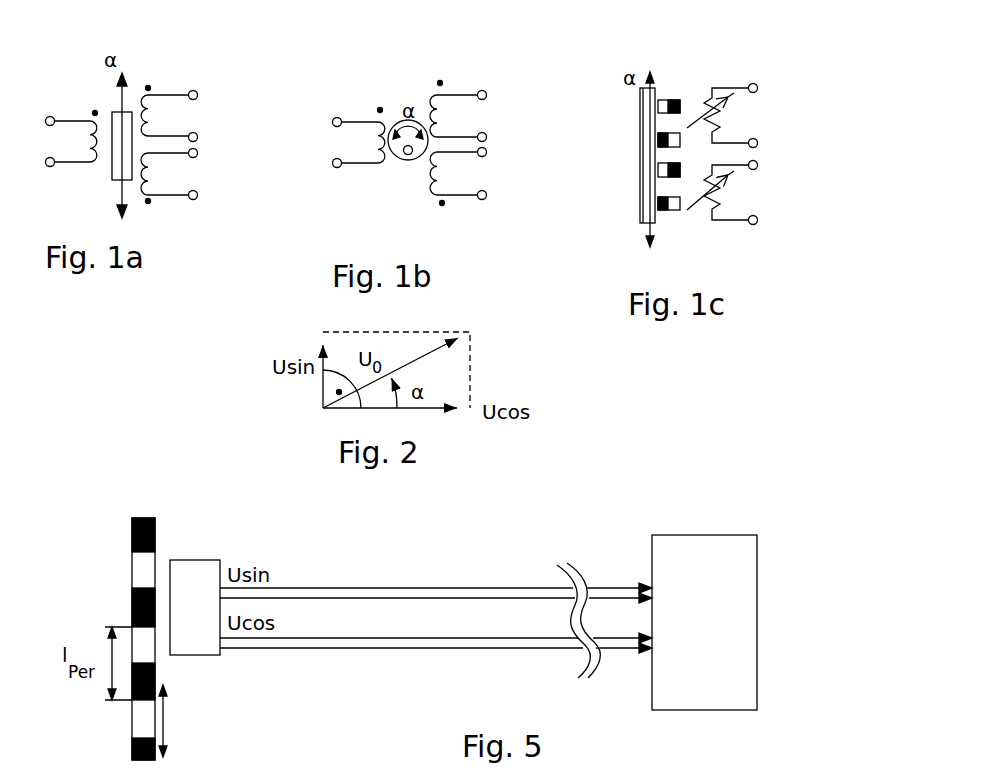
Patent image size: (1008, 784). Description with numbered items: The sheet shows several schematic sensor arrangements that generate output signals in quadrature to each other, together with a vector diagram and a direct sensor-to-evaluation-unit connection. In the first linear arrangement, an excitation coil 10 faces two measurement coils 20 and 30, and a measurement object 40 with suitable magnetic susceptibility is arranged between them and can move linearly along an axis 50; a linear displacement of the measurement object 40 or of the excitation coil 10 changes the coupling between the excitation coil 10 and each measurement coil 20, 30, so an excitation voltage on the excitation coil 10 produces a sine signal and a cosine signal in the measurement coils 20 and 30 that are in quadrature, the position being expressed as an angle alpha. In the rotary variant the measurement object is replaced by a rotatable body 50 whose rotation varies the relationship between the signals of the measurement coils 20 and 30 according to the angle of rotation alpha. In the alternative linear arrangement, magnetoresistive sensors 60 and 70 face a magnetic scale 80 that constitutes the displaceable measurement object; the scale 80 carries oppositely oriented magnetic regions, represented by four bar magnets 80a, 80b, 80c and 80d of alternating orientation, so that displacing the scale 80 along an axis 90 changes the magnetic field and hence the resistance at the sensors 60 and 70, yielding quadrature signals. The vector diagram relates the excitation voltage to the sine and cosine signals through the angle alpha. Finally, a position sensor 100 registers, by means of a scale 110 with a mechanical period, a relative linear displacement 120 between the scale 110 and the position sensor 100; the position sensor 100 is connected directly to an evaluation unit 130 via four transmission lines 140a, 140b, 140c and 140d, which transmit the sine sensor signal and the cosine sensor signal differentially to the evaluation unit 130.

In FIG. 1A, the excitation coil 10 is at (90, 167).
In FIG. 1B, the excitation coil 10 is at (367, 164).
In FIG. 1A, the measurement coil 20 is at (178, 88).
In FIG. 1B, the measurement coil 20 is at (460, 92).
In FIG. 1A, the measurement coil 30 is at (175, 203).
In FIG. 1B, the measurement coil 30 is at (467, 198).
In FIG. 1A, the measurement object 40 is at (116, 110).
In FIG. 1A, the axis / rotatable body 50 is at (123, 96).
In FIG. 1B, the axis / rotatable body 50 is at (400, 120).
In FIG. 1C, the magnetoresistive sensor 60 is at (728, 83).
In FIG. 1C, the magnetoresistive sensor 70 is at (725, 229).
In FIG. 1C, the magnetic scale 80 is at (637, 152).
In FIG. 1C, the bar magnet 80a is at (670, 100).
In FIG. 1C, the bar magnet 80b is at (675, 133).
In FIG. 1C, the bar magnet 80c is at (670, 178).
In FIG. 1C, the bar magnet 80d is at (662, 211).
In FIG. 1C, the axis 90 is at (648, 88).
In FIG. 5, the position sensor 100 is at (195, 559).
In FIG. 5, the scale 110 is at (155, 535).
In FIG. 5, the relative linear displacement 120 is at (165, 728).
In FIG. 5, the evaluation unit 130 is at (697, 533).
In FIG. 5, the transmission line 140a is at (377, 588).
In FIG. 5, the transmission line 140b is at (440, 598).
In FIG. 5, the transmission line 140c is at (322, 638).
In FIG. 5, the transmission line 140d is at (393, 648).